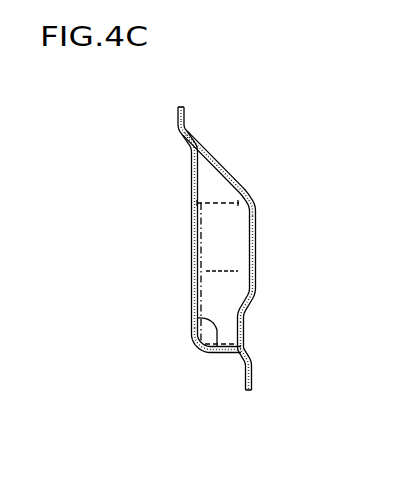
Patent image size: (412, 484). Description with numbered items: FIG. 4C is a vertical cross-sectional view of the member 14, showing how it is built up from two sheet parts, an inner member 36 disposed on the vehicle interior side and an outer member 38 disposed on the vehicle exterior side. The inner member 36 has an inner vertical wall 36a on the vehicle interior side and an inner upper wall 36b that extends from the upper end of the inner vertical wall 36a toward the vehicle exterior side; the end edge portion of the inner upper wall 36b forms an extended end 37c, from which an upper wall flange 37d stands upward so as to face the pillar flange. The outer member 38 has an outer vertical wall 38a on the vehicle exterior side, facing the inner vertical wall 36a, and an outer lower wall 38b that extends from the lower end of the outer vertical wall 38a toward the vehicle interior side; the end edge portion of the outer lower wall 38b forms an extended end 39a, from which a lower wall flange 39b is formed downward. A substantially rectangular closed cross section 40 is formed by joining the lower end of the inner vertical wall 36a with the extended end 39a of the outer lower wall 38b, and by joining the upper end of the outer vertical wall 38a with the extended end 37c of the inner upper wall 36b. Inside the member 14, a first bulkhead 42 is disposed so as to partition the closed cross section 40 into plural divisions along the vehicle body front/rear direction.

The member 14 is at (234, 268).
The inner member 36 is at (221, 158).
The inner vertical wall 36a is at (245, 331).
The inner upper wall 36b is at (243, 193).
The extended end 37c is at (182, 134).
The upper wall flange 37d is at (188, 118).
The outer member 38 is at (192, 171).
The outer vertical wall 38a is at (192, 262).
The outer lower wall 38b is at (214, 356).
The extended end 39a is at (253, 350).
The lower wall flange 39b is at (248, 392).
The closed cross section 40 is at (222, 294).
The first bulkhead 42 is at (221, 222).